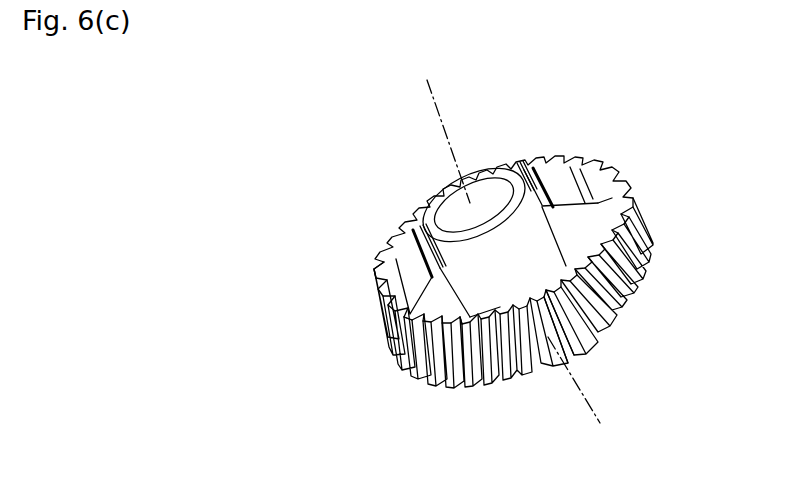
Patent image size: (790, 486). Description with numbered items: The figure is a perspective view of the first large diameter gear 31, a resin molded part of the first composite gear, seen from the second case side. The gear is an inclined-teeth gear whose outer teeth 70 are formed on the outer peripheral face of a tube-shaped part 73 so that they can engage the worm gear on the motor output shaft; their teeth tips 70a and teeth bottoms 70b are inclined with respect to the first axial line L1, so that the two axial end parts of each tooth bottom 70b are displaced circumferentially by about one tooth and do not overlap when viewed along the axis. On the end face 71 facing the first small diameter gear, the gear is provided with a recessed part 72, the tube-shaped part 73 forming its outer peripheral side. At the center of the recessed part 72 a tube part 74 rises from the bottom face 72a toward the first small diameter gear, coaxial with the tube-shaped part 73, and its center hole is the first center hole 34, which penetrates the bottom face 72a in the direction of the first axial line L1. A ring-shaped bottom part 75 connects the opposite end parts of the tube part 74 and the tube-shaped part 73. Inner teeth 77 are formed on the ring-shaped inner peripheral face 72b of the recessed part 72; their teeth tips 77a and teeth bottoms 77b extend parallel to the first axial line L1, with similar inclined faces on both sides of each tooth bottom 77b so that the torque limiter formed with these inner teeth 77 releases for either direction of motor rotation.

The first large diameter gear 31 is at (672, 152).
The first center hole 34 is at (441, 222).
The outer teeth 70 is at (479, 380).
The teeth tips 70a is at (542, 368).
The teeth bottoms 70b is at (535, 362).
The end face 71 is at (372, 268).
The recessed part 72 is at (583, 231).
The bottom face 72a is at (430, 282).
The ring-shaped inner peripheral face 72b is at (582, 176).
The tube-shaped part 73 is at (410, 325).
The tube part 74 is at (476, 290).
The ring-shaped bottom part 75 is at (444, 309).
The inner teeth 77 is at (556, 176).
The teeth tips 77a is at (524, 182).
The teeth bottoms 77b is at (541, 168).
The first axial line L1 is at (511, 240).